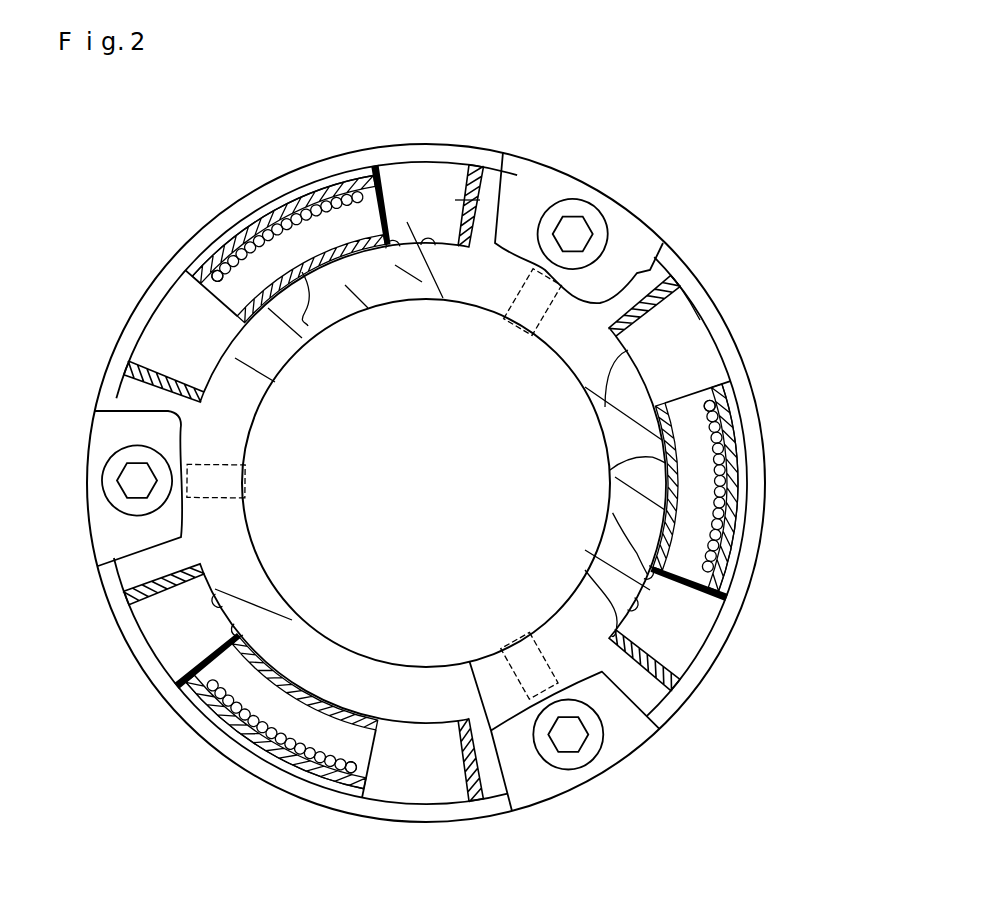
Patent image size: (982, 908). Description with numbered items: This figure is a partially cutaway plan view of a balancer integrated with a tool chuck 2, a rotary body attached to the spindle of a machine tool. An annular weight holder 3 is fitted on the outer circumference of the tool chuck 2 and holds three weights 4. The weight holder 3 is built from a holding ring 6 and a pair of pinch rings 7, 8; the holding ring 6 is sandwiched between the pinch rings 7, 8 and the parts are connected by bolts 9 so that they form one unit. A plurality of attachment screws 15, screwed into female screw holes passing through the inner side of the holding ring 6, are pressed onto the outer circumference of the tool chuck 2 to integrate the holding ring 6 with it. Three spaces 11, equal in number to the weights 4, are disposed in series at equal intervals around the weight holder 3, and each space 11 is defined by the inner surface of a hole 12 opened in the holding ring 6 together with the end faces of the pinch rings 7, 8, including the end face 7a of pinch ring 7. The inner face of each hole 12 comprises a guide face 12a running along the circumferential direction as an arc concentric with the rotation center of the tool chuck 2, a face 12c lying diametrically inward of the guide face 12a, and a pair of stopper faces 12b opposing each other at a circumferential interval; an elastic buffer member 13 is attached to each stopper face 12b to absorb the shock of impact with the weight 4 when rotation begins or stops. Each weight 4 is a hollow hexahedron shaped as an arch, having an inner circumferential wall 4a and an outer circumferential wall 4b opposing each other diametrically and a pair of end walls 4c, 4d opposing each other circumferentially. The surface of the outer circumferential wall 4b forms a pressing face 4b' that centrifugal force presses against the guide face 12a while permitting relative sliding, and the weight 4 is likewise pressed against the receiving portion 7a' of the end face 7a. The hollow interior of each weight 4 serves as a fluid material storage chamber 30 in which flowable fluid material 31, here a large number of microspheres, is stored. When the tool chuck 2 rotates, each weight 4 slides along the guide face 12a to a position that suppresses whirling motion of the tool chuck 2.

The tool chuck 2 is at (635, 202).
The weight holder 3 is at (530, 793).
The weight 4 is at (740, 376).
The inner circumferential wall 4a is at (285, 330).
The outer circumferential wall 4b is at (506, 481).
The pressing face 4b' is at (502, 469).
The end wall 4c is at (457, 242).
The end wall 4d is at (730, 355).
The holding ring 6 is at (688, 282).
The pinch ring 7 is at (692, 330).
The end face 7a is at (478, 140).
The receiving portion 7a' is at (426, 446).
The pinch ring 8 is at (652, 250).
The bolt 9 is at (580, 228).
The space 11 is at (171, 350).
The hole 12 is at (393, 178).
The guide face 12a is at (437, 193).
The stopper face 12b is at (686, 313).
The face 12c is at (423, 235).
The buffer member 13 is at (500, 207).
The attachment screw 15 is at (520, 322).
The fluid material storage chamber 30 is at (271, 260).
The fluid material 31 is at (217, 273).